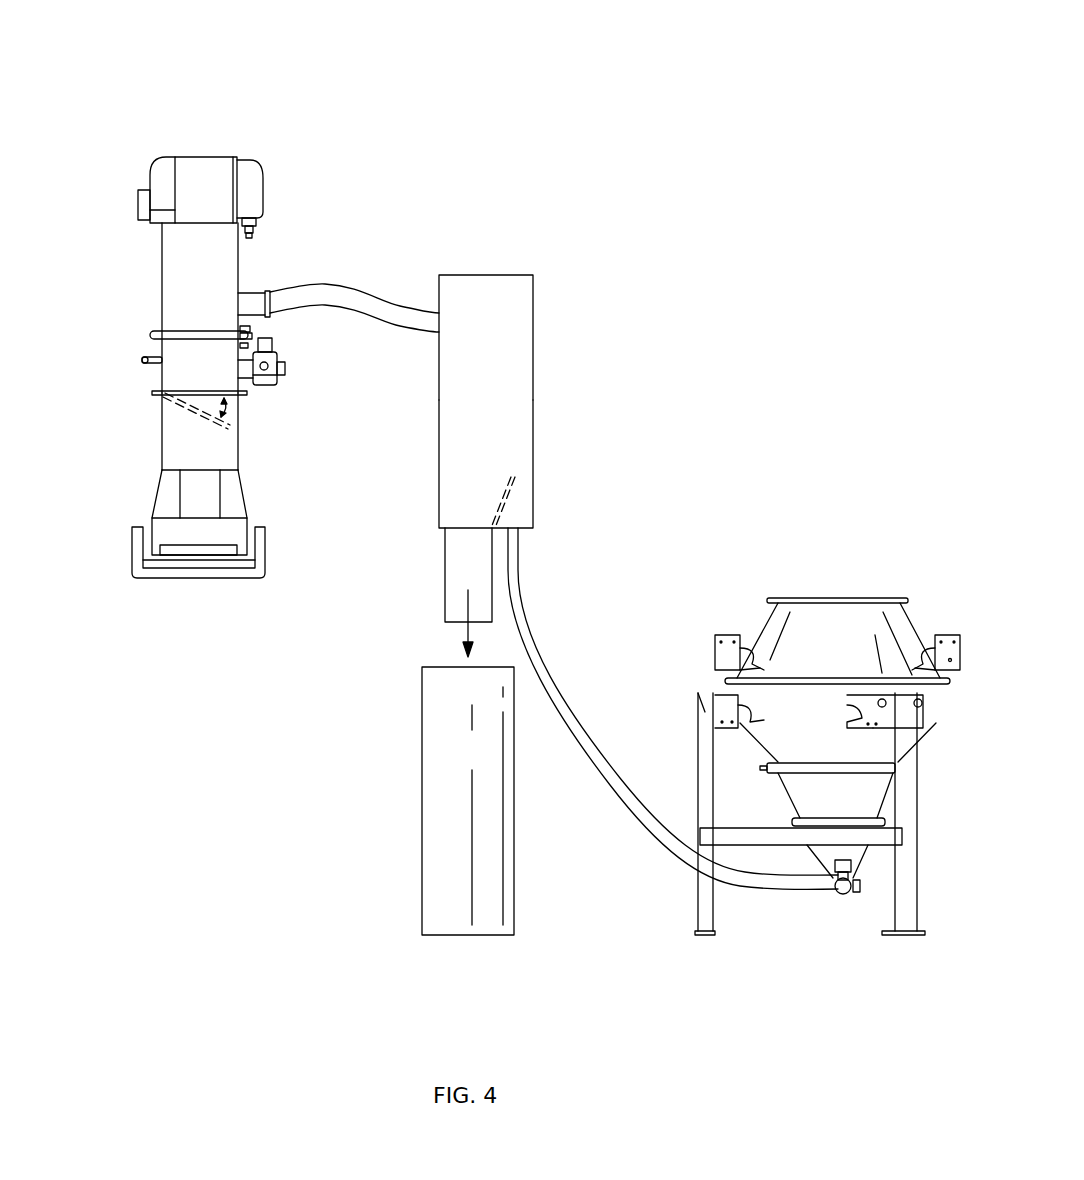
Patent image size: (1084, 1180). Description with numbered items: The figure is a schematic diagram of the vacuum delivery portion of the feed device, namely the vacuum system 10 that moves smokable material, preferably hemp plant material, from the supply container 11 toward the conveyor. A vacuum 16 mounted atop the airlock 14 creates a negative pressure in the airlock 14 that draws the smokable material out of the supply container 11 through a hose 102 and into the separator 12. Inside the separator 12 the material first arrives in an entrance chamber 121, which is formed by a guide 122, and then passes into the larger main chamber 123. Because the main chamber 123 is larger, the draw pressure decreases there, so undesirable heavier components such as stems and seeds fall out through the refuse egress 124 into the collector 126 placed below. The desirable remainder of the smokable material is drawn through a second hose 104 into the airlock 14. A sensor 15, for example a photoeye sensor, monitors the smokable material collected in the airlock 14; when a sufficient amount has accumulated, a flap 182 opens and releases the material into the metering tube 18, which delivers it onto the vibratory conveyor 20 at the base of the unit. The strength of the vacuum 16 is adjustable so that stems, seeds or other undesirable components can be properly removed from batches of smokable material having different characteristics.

The vacuum system 10 is at (608, 232).
The supply container 11 is at (862, 598).
The separator 12 is at (501, 401).
The airlock 14 is at (162, 260).
The sensor 15 is at (285, 370).
The vacuum 16 is at (210, 157).
The metering tube 18 is at (162, 448).
The vibratory conveyor 20 is at (132, 548).
The hose 102 is at (608, 782).
The hose 104 is at (337, 284).
The entrance chamber 121 is at (522, 503).
The guide 122 is at (510, 485).
The main chamber 123 is at (512, 327).
The refuse egress 124 is at (445, 562).
The collector 126 is at (422, 783).
The flap 182 is at (165, 415).